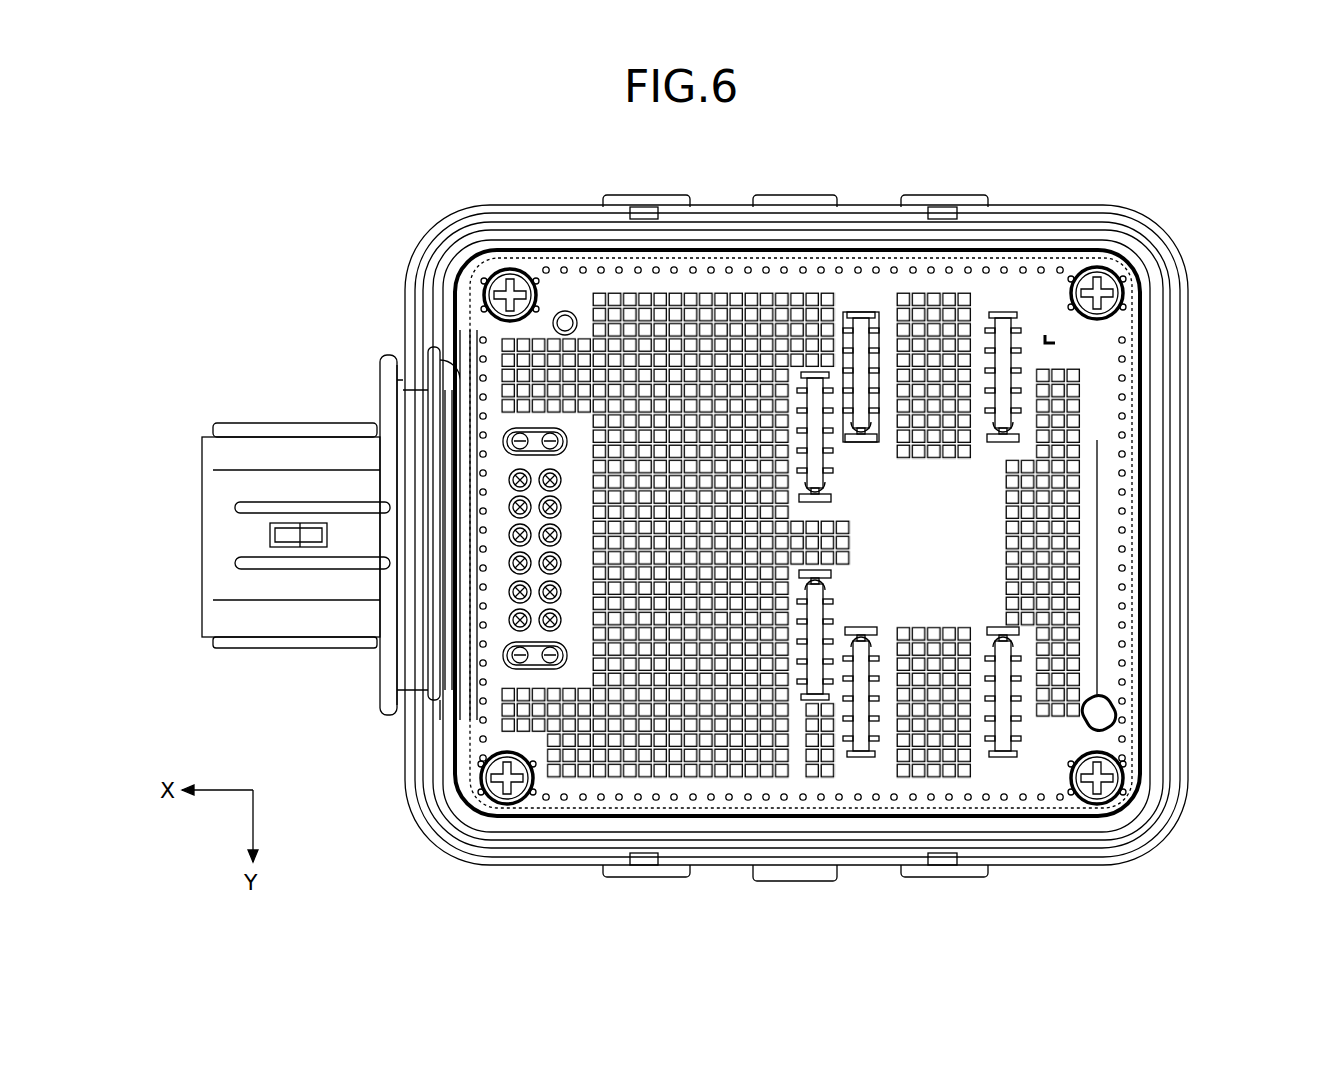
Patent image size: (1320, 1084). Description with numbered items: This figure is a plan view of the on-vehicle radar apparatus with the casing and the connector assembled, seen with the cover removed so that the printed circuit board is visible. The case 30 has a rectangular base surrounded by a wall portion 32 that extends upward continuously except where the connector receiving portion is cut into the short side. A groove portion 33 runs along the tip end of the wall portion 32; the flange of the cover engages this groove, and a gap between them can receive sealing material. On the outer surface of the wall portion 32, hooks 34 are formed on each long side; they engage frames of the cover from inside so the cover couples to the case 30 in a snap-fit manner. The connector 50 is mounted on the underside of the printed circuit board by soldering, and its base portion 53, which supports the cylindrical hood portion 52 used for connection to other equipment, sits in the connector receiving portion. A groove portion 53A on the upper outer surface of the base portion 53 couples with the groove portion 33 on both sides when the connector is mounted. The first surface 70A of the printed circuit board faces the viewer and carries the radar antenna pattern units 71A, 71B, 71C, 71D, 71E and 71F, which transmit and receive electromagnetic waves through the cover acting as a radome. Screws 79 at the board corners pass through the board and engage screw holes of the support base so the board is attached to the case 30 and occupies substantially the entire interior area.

The case 30 is at (1193, 800).
The wall portion 32 is at (475, 843).
The groove portion 33 is at (462, 826).
The hook 34 is at (648, 198).
The connector 50 is at (296, 526).
The hood portion 52 is at (272, 430).
The base portion 53 is at (382, 697).
The groove portion 53A is at (428, 642).
The first surface 70A is at (852, 308).
The radar antenna pattern unit 71A is at (825, 372).
The radar antenna pattern unit 71B is at (880, 318).
The radar antenna pattern unit 71C is at (1010, 318).
The radar antenna pattern unit 71D is at (828, 700).
The radar antenna pattern unit 71E is at (873, 757).
The radar antenna pattern unit 71F is at (1013, 757).
The screw 79 is at (485, 283).